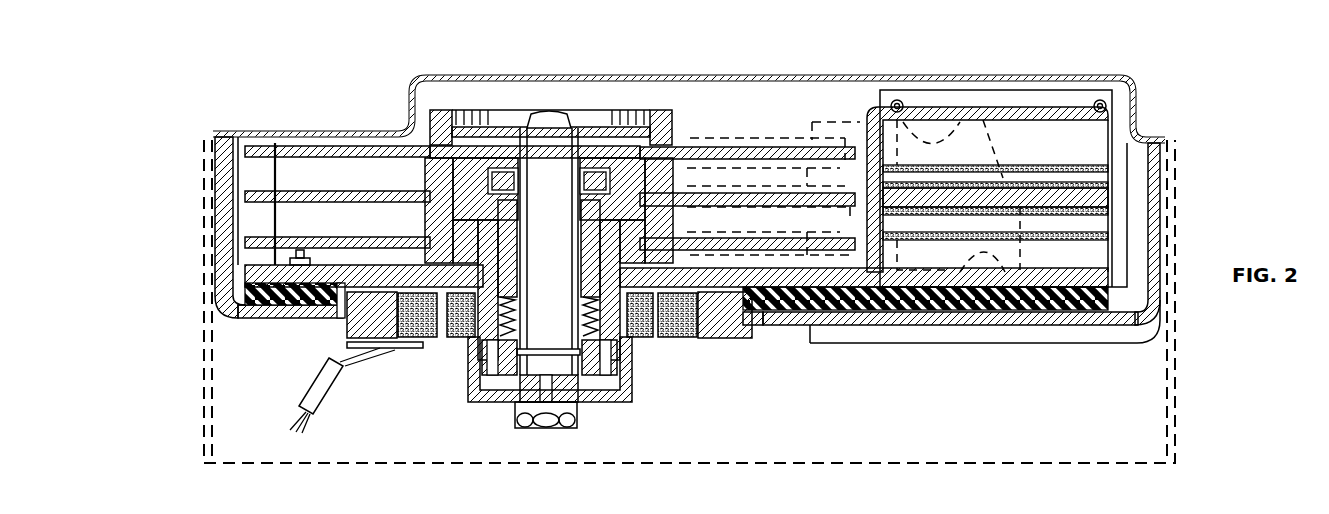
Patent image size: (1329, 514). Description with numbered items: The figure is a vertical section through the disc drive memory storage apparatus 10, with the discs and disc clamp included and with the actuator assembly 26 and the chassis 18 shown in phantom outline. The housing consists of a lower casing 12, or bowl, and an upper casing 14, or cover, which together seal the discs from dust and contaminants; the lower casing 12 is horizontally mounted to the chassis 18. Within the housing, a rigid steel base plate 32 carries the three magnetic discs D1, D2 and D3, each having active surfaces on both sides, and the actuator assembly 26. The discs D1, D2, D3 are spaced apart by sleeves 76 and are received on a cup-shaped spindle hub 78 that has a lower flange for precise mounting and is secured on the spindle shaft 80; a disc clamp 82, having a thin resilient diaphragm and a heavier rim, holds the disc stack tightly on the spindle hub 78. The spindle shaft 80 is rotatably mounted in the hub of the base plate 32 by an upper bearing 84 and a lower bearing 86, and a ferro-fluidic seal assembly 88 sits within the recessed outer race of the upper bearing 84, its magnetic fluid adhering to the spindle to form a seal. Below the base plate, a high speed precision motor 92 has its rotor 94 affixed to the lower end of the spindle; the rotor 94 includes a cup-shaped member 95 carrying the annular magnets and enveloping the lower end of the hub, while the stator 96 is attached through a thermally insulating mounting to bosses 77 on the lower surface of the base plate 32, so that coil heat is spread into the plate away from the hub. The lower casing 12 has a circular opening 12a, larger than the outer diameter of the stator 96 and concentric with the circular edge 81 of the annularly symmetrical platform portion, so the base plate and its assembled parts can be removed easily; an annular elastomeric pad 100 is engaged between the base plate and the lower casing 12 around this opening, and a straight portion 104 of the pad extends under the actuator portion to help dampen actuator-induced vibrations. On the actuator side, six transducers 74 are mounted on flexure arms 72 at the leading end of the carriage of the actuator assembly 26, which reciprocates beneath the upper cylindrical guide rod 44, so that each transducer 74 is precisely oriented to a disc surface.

The disc drive memory storage apparatus 10 is at (328, 90).
The lower casing 12 is at (221, 322).
The circular opening 12a is at (342, 320).
The upper casing 14 is at (445, 70).
The chassis 18 is at (203, 443).
The actuator assembly 26 is at (814, 120).
The base plate 32 is at (243, 273).
The upper cylindrical guide rod 44 is at (940, 100).
The flexure arms 72 is at (768, 177).
The transducers 74 is at (690, 142).
The sleeves 76 is at (425, 180).
The bosses 77 is at (385, 292).
The spindle hub 78 is at (589, 147).
The spindle shaft 80 is at (560, 318).
The dashed line 81 is at (297, 320).
The disc clamp 82 is at (663, 142).
The upper bearing 84 is at (494, 186).
The lower bearing 86 is at (585, 351).
The ferro-fluidic seal assembly 88 is at (616, 186).
The motor 92 is at (458, 352).
The rotor 94 is at (587, 403).
The cup-shaped member 95 is at (502, 380).
The stator 96 is at (373, 330).
The annular elastomeric pad 100 is at (225, 303).
The straight portion 104 is at (1096, 283).
The magnetic disc D1 is at (245, 151).
The magnetic disc D2 is at (245, 196).
The magnetic disc D3 is at (245, 242).